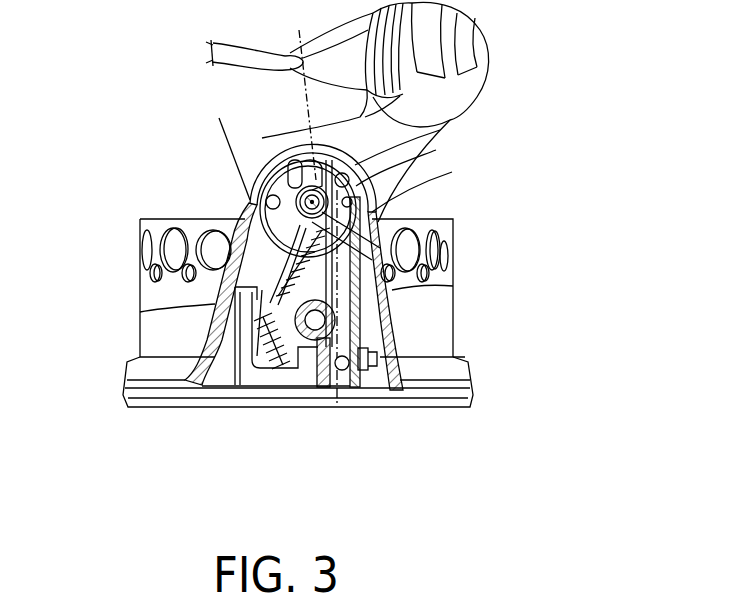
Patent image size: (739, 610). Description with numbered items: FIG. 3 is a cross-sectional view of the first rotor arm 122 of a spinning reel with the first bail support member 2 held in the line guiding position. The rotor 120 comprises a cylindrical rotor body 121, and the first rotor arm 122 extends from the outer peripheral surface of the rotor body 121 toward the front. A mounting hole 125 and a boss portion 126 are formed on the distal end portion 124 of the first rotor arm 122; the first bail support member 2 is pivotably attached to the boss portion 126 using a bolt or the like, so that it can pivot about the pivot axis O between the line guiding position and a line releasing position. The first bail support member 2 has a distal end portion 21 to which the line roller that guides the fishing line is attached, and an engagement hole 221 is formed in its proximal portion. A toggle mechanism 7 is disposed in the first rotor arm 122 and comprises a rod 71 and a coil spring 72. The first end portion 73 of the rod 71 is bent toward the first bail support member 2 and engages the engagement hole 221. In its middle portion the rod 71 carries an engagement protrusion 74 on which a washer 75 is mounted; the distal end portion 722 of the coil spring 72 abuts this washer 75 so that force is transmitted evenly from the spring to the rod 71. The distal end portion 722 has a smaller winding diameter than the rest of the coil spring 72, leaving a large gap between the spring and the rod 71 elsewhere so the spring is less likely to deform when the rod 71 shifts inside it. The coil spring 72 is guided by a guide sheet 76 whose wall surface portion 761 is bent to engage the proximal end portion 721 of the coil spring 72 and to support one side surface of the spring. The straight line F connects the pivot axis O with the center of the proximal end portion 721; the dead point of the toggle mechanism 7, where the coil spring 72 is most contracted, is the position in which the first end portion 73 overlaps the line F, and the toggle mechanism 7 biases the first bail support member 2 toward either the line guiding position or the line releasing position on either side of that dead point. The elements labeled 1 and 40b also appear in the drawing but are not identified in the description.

The cable 1 is at (236, 50).
The axis line 40b is at (293, 92).
The distal end portion 21 is at (490, 50).
The first bail support member 2 is at (450, 117).
The boss portion 126 is at (288, 180).
The pivot axis O is at (301, 134).
The straight line F is at (227, 150).
The mounting hole 125 is at (260, 188).
The distal end portion 124 is at (247, 207).
The rotor 120 is at (288, 277).
The toggle mechanism 7 is at (233, 227).
The engagement hole 221 is at (398, 155).
The first end portion 73 is at (400, 197).
The engagement protrusion 74 is at (398, 217).
The rotor body 121 is at (140, 281).
The washer 75 is at (360, 262).
The distal end portion 722 is at (455, 265).
The first rotor arm 122 is at (140, 312).
The rod 71 is at (395, 290).
The wall surface portion 761 is at (230, 375).
The proximal end portion 721 is at (262, 405).
The guide sheet 76 is at (292, 375).
The coil spring 72 is at (312, 402).